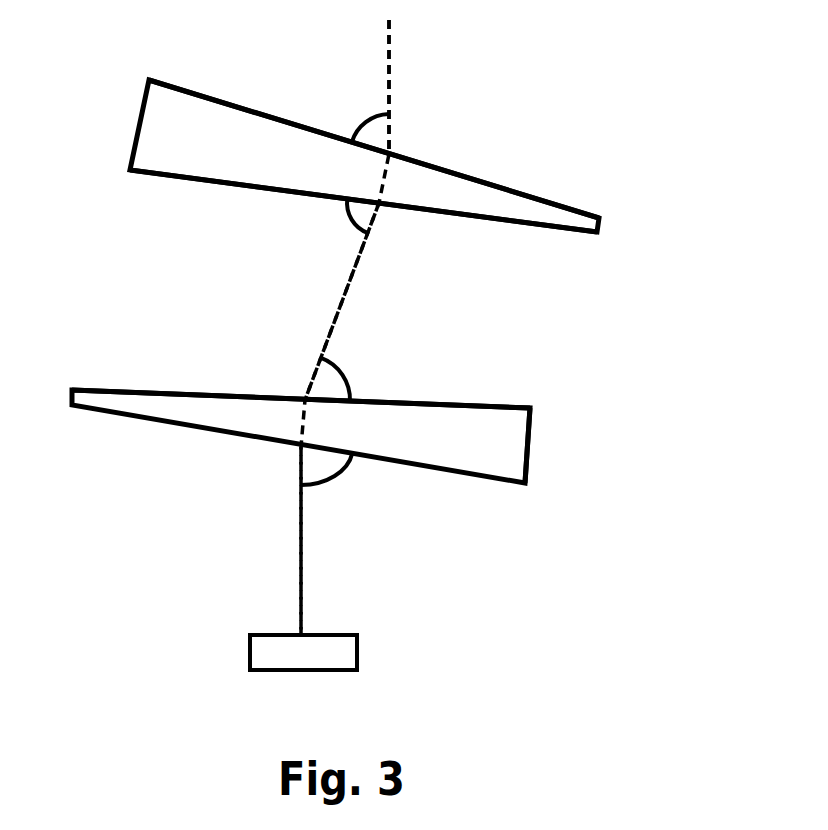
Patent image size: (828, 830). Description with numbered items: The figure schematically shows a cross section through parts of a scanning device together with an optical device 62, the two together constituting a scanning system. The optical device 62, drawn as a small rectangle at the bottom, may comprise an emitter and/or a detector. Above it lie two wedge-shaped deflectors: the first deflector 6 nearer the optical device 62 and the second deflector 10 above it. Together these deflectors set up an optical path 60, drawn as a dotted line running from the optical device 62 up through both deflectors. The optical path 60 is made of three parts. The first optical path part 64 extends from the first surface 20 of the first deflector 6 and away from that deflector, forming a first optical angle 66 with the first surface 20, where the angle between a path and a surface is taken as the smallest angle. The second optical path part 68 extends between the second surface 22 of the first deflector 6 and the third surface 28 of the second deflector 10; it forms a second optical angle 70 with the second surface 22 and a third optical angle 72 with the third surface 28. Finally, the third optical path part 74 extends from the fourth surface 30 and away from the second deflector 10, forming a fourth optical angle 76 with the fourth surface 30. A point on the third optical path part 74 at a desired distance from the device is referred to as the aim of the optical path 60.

The first deflector 6 is at (502, 462).
The second deflector 10 is at (176, 112).
The first surface 20 is at (167, 423).
The second surface 22 is at (200, 392).
The third surface 28 is at (493, 222).
The fourth surface 30 is at (510, 188).
The optical path 60 is at (335, 320).
The optical device 62 is at (264, 652).
The first optical path part 64 is at (300, 530).
The first optical angle 66 is at (328, 480).
The second optical path part 68 is at (360, 260).
The second optical angle 70 is at (348, 378).
The third optical angle 72 is at (345, 200).
The third optical path part 74 is at (390, 62).
The fourth optical angle 76 is at (360, 120).